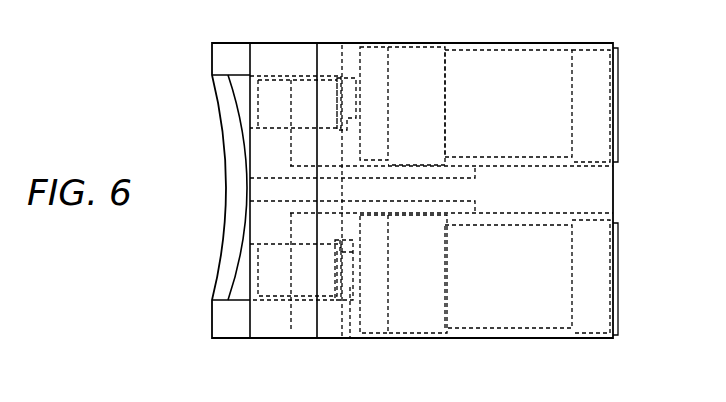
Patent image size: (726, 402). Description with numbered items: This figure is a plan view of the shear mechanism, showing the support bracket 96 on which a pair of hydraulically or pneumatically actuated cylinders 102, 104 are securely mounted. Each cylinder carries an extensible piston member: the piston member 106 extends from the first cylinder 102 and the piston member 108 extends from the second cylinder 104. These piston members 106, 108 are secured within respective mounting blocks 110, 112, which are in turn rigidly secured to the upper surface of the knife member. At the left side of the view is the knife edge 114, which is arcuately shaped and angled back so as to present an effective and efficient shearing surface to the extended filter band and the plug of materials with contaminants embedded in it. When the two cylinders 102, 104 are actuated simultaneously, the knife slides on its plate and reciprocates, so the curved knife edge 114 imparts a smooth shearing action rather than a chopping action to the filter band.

The support bracket 96 is at (600, 195).
The cylinder 102 is at (527, 50).
The cylinder 104 is at (505, 328).
The extensible piston member 106 is at (356, 138).
The extensible piston member 108 is at (347, 337).
The mounting block 110 is at (290, 90).
The mounting block 112 is at (303, 301).
The knife edge 114 is at (230, 152).